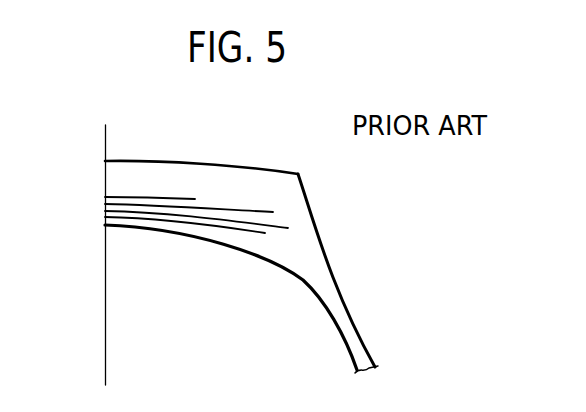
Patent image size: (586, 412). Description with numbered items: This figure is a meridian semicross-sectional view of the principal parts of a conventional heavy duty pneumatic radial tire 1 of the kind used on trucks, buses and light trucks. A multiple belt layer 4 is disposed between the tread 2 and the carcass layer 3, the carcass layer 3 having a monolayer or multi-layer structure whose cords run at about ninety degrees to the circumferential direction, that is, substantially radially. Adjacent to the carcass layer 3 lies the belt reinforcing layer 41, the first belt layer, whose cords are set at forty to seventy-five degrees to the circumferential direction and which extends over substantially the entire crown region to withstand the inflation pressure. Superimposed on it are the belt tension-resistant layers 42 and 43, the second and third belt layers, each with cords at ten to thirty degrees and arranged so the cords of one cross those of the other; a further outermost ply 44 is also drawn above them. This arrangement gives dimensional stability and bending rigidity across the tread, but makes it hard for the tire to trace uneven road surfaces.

The tire 1 is at (333, 249).
The tread 2 is at (165, 172).
The carcass layer 3 is at (328, 308).
The belt layer 4 is at (165, 208).
The belt reinforcing layer 41 is at (152, 224).
The belt tension-resistant layer 42 is at (248, 224).
The belt tension-resistant layer 43 is at (256, 213).
The fourth belt ply 44 is at (122, 196).